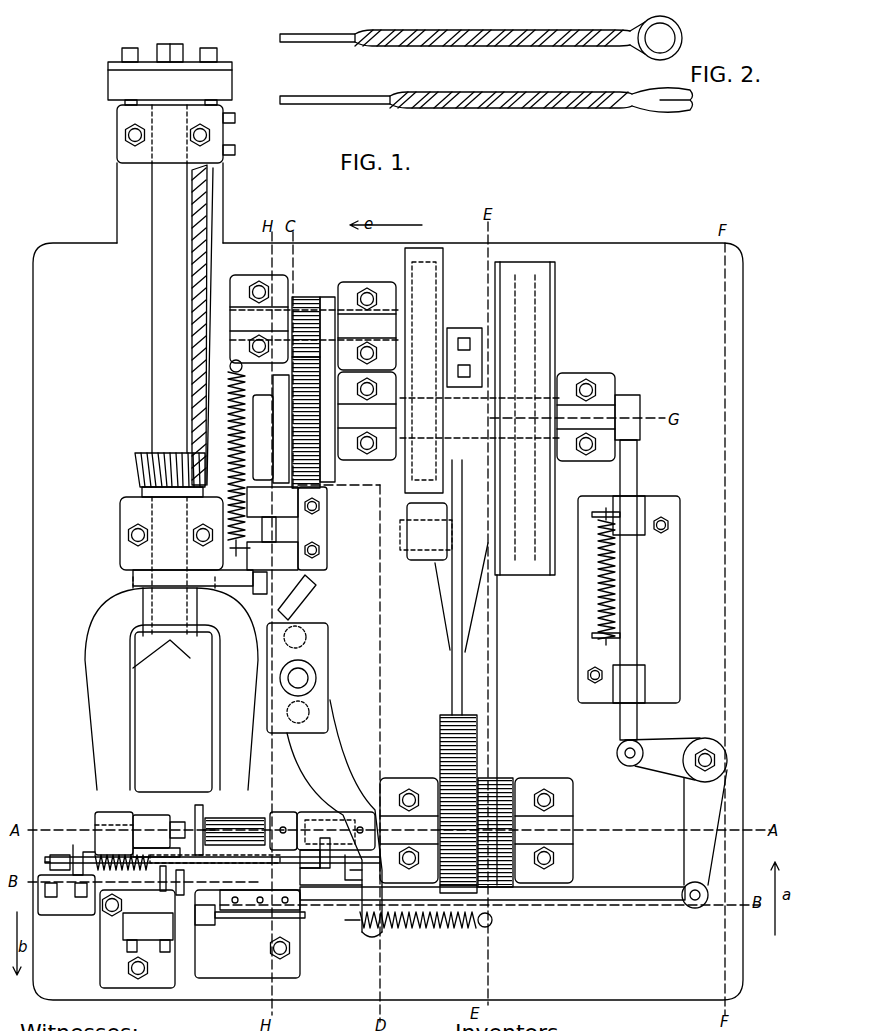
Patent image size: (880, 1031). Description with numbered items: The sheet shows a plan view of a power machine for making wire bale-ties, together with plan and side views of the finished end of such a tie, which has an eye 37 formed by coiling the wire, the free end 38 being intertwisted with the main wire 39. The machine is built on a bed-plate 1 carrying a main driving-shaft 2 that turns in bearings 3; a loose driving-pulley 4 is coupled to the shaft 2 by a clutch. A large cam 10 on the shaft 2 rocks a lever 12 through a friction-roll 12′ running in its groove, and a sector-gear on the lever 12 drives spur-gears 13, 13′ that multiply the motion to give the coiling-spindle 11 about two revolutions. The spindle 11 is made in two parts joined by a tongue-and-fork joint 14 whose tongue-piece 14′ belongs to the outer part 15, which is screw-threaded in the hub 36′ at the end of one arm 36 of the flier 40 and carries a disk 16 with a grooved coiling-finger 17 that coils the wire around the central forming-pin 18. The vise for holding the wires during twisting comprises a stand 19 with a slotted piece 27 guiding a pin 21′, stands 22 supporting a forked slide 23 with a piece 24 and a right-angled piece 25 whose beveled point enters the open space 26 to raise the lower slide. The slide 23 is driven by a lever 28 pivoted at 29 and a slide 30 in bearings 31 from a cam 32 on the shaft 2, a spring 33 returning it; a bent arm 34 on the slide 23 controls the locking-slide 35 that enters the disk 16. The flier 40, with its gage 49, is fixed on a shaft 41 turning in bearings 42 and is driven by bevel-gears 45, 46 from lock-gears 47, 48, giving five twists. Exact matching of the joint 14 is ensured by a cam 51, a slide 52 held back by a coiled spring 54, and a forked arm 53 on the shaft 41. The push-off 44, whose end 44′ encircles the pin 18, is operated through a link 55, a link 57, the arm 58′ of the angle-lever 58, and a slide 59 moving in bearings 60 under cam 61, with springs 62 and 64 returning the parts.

In FIG. 1, the bed-plate 1 is at (388, 621).
In FIG. 1, the main driving-shaft 2 is at (640, 405).
In FIG. 1, the bearings 3 is at (422, 371).
In FIG. 1, the driving-pulley 4 is at (525, 573).
In FIG. 1, the large cam 10 is at (424, 370).
In FIG. 1, the coiling-spindle 11 is at (573, 820).
In FIG. 1, the rocking lever 12 is at (475, 604).
In FIG. 1, the friction-roll 12′ is at (441, 444).
In FIG. 1, the spur-gear 13 is at (497, 790).
In FIG. 1, the spur-gear 13′ is at (500, 890).
In FIG. 1, the tongue-and-fork joint 14 is at (336, 823).
In FIG. 1, the tongue-piece 14′ is at (295, 820).
In FIG. 1, the outer part of coiling-spindle 15 is at (214, 815).
In FIG. 1, the disk 16 is at (200, 806).
In FIG. 1, the coiling-finger 17 is at (181, 820).
In FIG. 1, the forming-pin 18 is at (160, 851).
In FIG. 1, the stand 19 is at (106, 931).
In FIG. 1, the pin 21′ is at (173, 878).
In FIG. 1, the stands 22 is at (245, 926).
In FIG. 1, the forked slide 23 is at (320, 912).
In FIG. 1, the piece 24 is at (240, 912).
In FIG. 1, the right-angled piece 25 is at (260, 900).
In FIG. 1, the open space 26 is at (160, 903).
In FIG. 1, the slotted piece 27 is at (191, 881).
In FIG. 1, the lever 28 is at (312, 612).
In FIG. 1, the pivot 29 is at (300, 678).
In FIG. 1, the slide 30 is at (302, 553).
In FIG. 1, the bearings 31 is at (272, 528).
In FIG. 1, the cam 32 is at (283, 429).
In FIG. 1, the spring 33 is at (410, 931).
In FIG. 1, the bent arm 34 is at (352, 870).
In FIG. 1, the locking-slide 35 is at (250, 864).
In FIG. 1, the arms of flier 36 is at (170, 655).
In FIG. 1, the hub 36′ is at (250, 815).
In FIG. 2, the eye 37 is at (682, 40).
In FIG. 2, the free end of wire 38 is at (360, 40).
In FIG. 2, the main wire 39 is at (300, 38).
In FIG. 1, the flier 40 is at (155, 690).
In FIG. 1, the shaft 41 is at (170, 370).
In FIG. 1, the bearings 42 is at (171, 307).
In FIG. 1, the push-off 44 is at (78, 846).
In FIG. 1, the end of push-off 44′ is at (153, 826).
In FIG. 1, the bevel-gear 45 is at (136, 478).
In FIG. 1, the bevel-gear 46 is at (196, 389).
In FIG. 1, the lock-gear 47 is at (306, 298).
In FIG. 1, the lock-gear 48 is at (308, 420).
In FIG. 1, the gage 49 is at (160, 652).
In FIG. 1, the cam 51 is at (262, 437).
In FIG. 1, the slide 52 is at (264, 529).
In FIG. 1, the forked arm 53 is at (258, 595).
In FIG. 1, the coiled spring 54 is at (32, 862).
In FIG. 1, the link 55 is at (212, 872).
In FIG. 1, the link 57 is at (492, 897).
In FIG. 1, the angle-lever 58 is at (696, 769).
In FIG. 1, the arm of angle-lever 58′ is at (704, 839).
In FIG. 1, the slide 59 is at (629, 599).
In FIG. 1, the bearings 60 is at (629, 599).
In FIG. 1, the cam 61 is at (637, 441).
In FIG. 1, the spring 62 is at (600, 576).
In FIG. 1, the spring 64 is at (122, 872).